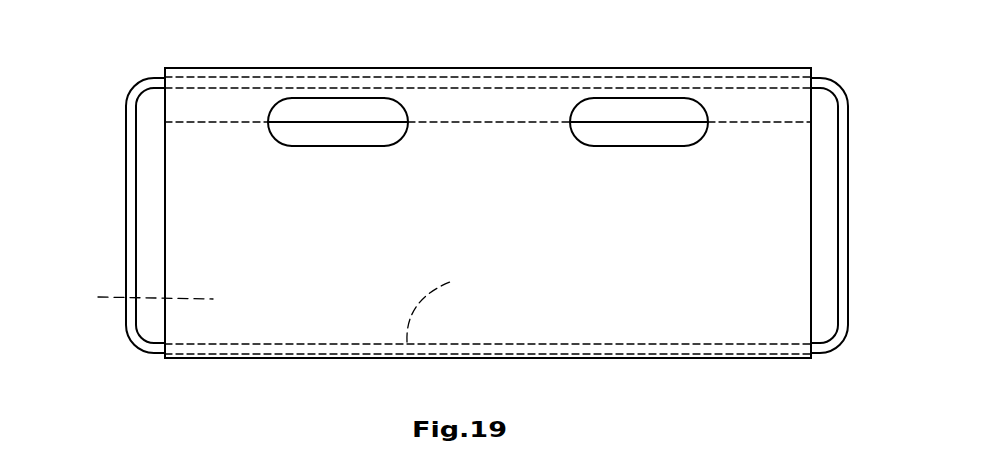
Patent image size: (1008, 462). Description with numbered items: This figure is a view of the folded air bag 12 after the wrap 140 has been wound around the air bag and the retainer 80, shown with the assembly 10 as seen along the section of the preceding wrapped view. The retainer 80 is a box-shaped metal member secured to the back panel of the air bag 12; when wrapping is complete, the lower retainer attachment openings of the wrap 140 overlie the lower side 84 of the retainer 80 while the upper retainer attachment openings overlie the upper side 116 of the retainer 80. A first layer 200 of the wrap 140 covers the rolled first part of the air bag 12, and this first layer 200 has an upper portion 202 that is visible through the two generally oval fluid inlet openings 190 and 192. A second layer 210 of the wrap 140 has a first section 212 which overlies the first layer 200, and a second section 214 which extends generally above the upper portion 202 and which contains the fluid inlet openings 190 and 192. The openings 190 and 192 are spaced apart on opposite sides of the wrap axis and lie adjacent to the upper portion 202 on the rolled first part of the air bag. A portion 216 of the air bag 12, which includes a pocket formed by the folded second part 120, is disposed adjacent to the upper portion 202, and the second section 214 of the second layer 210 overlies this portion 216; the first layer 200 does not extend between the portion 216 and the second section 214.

The holder assembly 10 is at (106, 249).
The air bag 12 is at (140, 299).
The retainer 80 is at (128, 208).
The lower side of the retainer 84 is at (443, 303).
The upper side of the retainer 116 is at (497, 82).
The second part of the air bag 120 is at (352, 107).
The wrap 140 is at (165, 160).
The fluid inlet opening 190 is at (322, 147).
The fluid inlet opening 192 is at (615, 147).
The first layer of the wrap 200 is at (358, 137).
The upper portion of the first layer 202 is at (378, 122).
The second layer of the wrap 210 is at (722, 249).
The first section of the second layer 212 is at (633, 302).
The second section of the second layer 214 is at (220, 110).
The portion of the air bag 216 is at (305, 107).